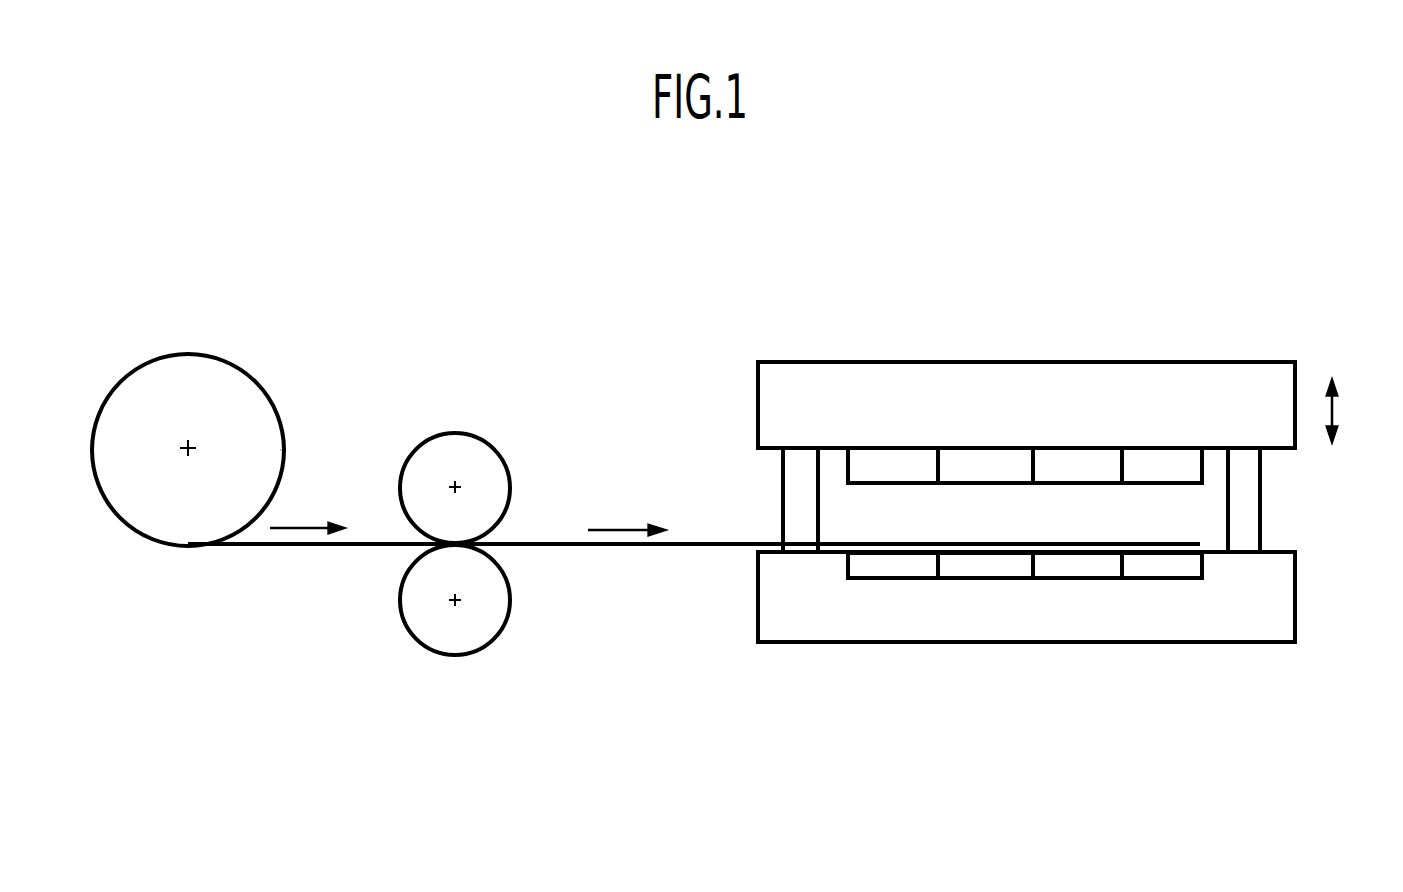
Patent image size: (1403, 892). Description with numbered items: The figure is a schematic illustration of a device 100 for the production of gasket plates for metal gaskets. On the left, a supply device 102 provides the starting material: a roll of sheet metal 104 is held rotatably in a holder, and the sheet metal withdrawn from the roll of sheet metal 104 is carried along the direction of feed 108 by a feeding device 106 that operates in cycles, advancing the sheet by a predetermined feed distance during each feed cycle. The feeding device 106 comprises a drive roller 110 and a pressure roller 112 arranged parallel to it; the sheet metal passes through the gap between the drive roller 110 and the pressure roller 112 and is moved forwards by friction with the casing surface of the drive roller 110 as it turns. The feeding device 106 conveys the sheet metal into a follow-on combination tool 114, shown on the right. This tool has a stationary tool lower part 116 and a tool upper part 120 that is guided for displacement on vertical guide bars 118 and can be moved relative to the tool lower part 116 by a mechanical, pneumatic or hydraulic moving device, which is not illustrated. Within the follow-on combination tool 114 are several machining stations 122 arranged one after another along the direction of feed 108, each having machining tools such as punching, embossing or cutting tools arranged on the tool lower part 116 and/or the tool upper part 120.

The device for the production of gasket plates 100 is at (613, 590).
The supply device 102 is at (332, 418).
The roll of sheet metal 104 is at (210, 393).
The feeding device 106 is at (488, 496).
The direction of feed 108 is at (620, 527).
The drive roller 110 is at (454, 452).
The pressure roller 112 is at (467, 637).
The follow-on combination tool 114 is at (1057, 499).
The tool lower part 116 is at (1267, 603).
The vertical guide bars 118 is at (801, 478).
The tool upper part 120 is at (968, 403).
The machining stations 122 is at (1157, 600).